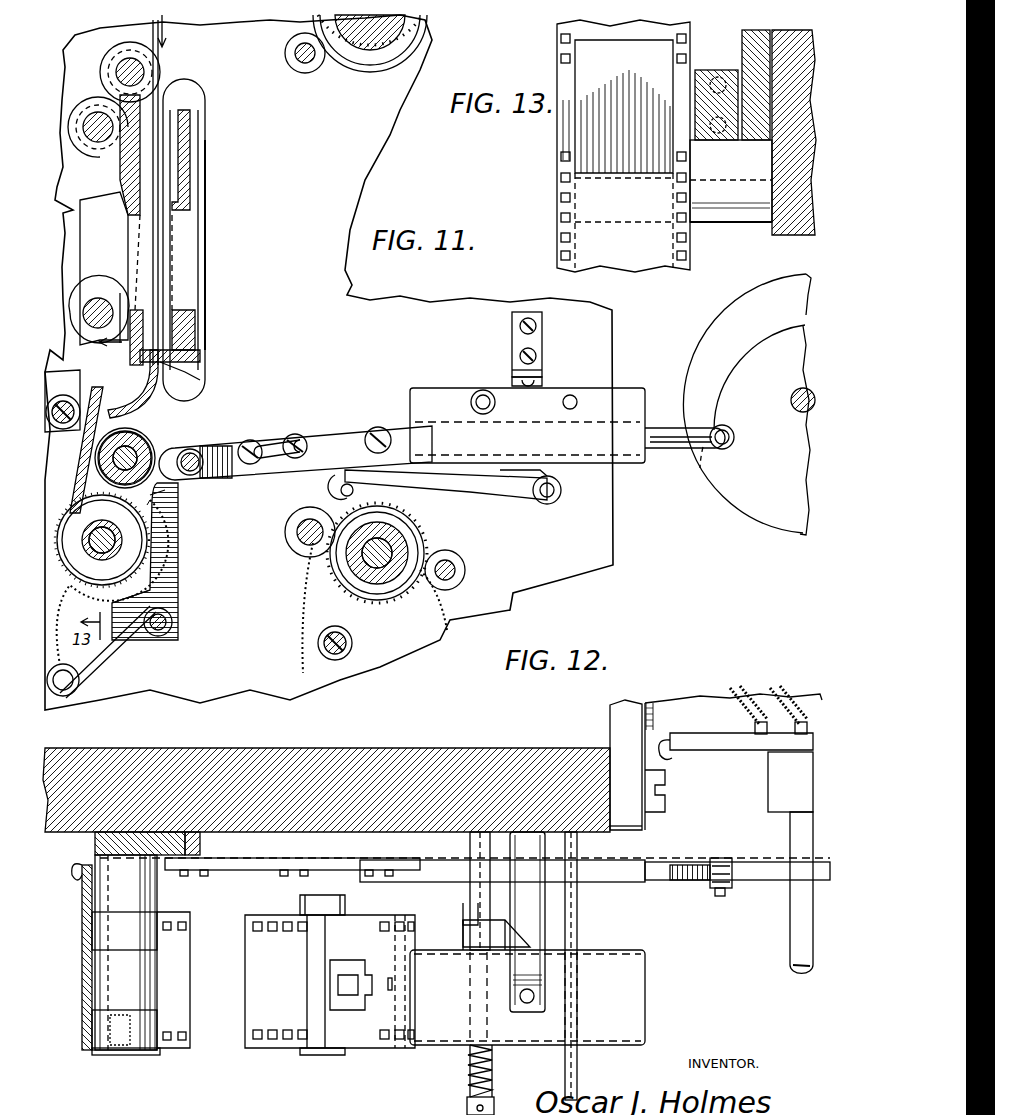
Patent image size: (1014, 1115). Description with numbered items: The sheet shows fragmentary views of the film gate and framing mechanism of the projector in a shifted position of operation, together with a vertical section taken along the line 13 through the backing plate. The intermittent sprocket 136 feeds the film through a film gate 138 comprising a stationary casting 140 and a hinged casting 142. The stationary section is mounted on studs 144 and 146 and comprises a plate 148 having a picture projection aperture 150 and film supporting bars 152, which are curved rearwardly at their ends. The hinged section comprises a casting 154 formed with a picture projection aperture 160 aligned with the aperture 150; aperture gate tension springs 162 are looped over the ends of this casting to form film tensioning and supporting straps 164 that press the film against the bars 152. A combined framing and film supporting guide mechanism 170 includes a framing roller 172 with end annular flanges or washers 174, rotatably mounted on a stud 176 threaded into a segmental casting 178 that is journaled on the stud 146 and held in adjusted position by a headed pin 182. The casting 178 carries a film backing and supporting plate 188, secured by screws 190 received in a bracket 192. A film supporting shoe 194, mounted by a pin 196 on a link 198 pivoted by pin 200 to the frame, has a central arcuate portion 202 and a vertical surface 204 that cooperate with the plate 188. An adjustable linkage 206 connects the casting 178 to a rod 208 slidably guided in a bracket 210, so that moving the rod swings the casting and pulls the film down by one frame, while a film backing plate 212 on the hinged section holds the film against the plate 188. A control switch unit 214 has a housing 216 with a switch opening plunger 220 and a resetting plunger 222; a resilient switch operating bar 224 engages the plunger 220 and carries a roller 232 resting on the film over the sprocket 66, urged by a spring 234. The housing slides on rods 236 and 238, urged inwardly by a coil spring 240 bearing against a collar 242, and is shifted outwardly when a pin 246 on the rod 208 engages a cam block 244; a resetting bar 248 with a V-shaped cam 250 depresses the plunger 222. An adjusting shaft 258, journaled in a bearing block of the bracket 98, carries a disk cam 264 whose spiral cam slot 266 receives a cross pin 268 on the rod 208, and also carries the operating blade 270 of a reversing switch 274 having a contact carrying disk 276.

In FIG. 11, the section line 13 is at (92, 303).
In FIG. 11, the sprocket 66 is at (383, 592).
In FIG. 12, the bracket 98 is at (618, 738).
In FIG. 11, the intermittent sprocket 136 is at (82, 570).
In FIG. 11, the film gate 138 is at (218, 257).
In FIG. 11, the stationary member or casting 140 is at (125, 190).
In FIG. 11, the hinged member or casting 142 is at (185, 115).
In FIG. 11, the stud 144 is at (96, 298).
In FIG. 11, the stud 146 is at (98, 140).
In FIG. 11, the plate 148 is at (130, 342).
In FIG. 11, the picture projection aperture 150 is at (130, 247).
In FIG. 11, the film supporting bars 152 is at (147, 127).
In FIG. 11, the casting 154 is at (192, 313).
In FIG. 11, the picture projection aperture 160 is at (182, 222).
In FIG. 11, the aperture gate tension springs 162 is at (207, 140).
In FIG. 11, the film tensioning and supporting straps 164 is at (162, 145).
In FIG. 11, the combined framing and film supporting guide mechanism 170 is at (214, 488).
In FIG. 11, the framing roller 172 is at (152, 446).
In FIG. 12, the framing roller 172 is at (156, 974).
In FIG. 12, the end annular flanges or washers 174 is at (160, 912).
In FIG. 11, the stud 176 is at (188, 455).
In FIG. 11, the segmental casting 178 is at (110, 382).
In FIG. 13, the segmental casting 178 is at (750, 45).
In FIG. 12, the segmental casting 178 is at (165, 830).
In FIG. 11, the headed pin 182 is at (63, 395).
In FIG. 11, the film backing and supporting plate 188 is at (95, 500).
In FIG. 13, the film backing and supporting plate 188 is at (557, 125).
In FIG. 12, the film backing and supporting plate 188 is at (85, 1040).
In FIG. 13, the screws 190 is at (726, 142).
In FIG. 12, the screws 190 is at (74, 872).
In FIG. 13, the bracket 192 is at (710, 72).
In FIG. 11, the film supporting shoe 194 is at (178, 548).
In FIG. 11, the pin 196 is at (172, 620).
In FIG. 11, the link 198 is at (140, 655).
In FIG. 11, the pin 200 is at (80, 698).
In FIG. 11, the central arcuate portion 202 is at (180, 575).
In FIG. 11, the vertical surface 204 is at (160, 500).
In FIG. 11, the adjustable linkage 206 is at (295, 433).
In FIG. 12, the adjustable linkage 206 is at (292, 858).
In FIG. 11, the rod 208 is at (672, 462).
In FIG. 12, the rod 208 is at (650, 864).
In FIG. 12, the bracket 210 is at (612, 898).
In FIG. 11, the film backing plate 212 is at (190, 368).
In FIG. 11, the control switch unit 214 is at (420, 372).
In FIG. 12, the control switch unit 214 is at (659, 1000).
In FIG. 11, the housing 216 is at (620, 385).
In FIG. 12, the housing 216 is at (630, 965).
In FIG. 11, the switch opening plunger 220 is at (583, 470).
In FIG. 11, the switch closing or resetting plunger 222 is at (544, 378).
In FIG. 11, the resilient switch operating bar 224 is at (453, 476).
In FIG. 12, the resilient switch operating bar 224 is at (380, 1015).
In FIG. 11, the roller 232 is at (340, 495).
In FIG. 12, the roller 232 is at (340, 996).
In FIG. 11, the spring 234 is at (520, 492).
In FIG. 12, the rod 236 is at (470, 845).
In FIG. 12, the rod 238 is at (577, 935).
In FIG. 12, the coil spring 240 is at (493, 1085).
In FIG. 12, the collar 242 is at (467, 1110).
In FIG. 12, the cam block 244 is at (463, 940).
In FIG. 12, the pin 246 is at (463, 900).
In FIG. 11, the switch closing or resetting bar 248 is at (545, 326).
In FIG. 11, the V-shaped cam 250 is at (518, 378).
In FIG. 11, the adjusting shaft 258 is at (790, 400).
In FIG. 11, the disk cam 264 is at (737, 505).
In FIG. 11, the spiral cam slot 266 is at (720, 352).
In FIG. 11, the cross pin 268 is at (735, 447).
In FIG. 12, the cross pin 268 is at (725, 895).
In FIG. 12, the operating blade 270 is at (765, 755).
In FIG. 12, the reversing switch 274 is at (740, 773).
In FIG. 12, the contact carrying disk 276 is at (665, 750).